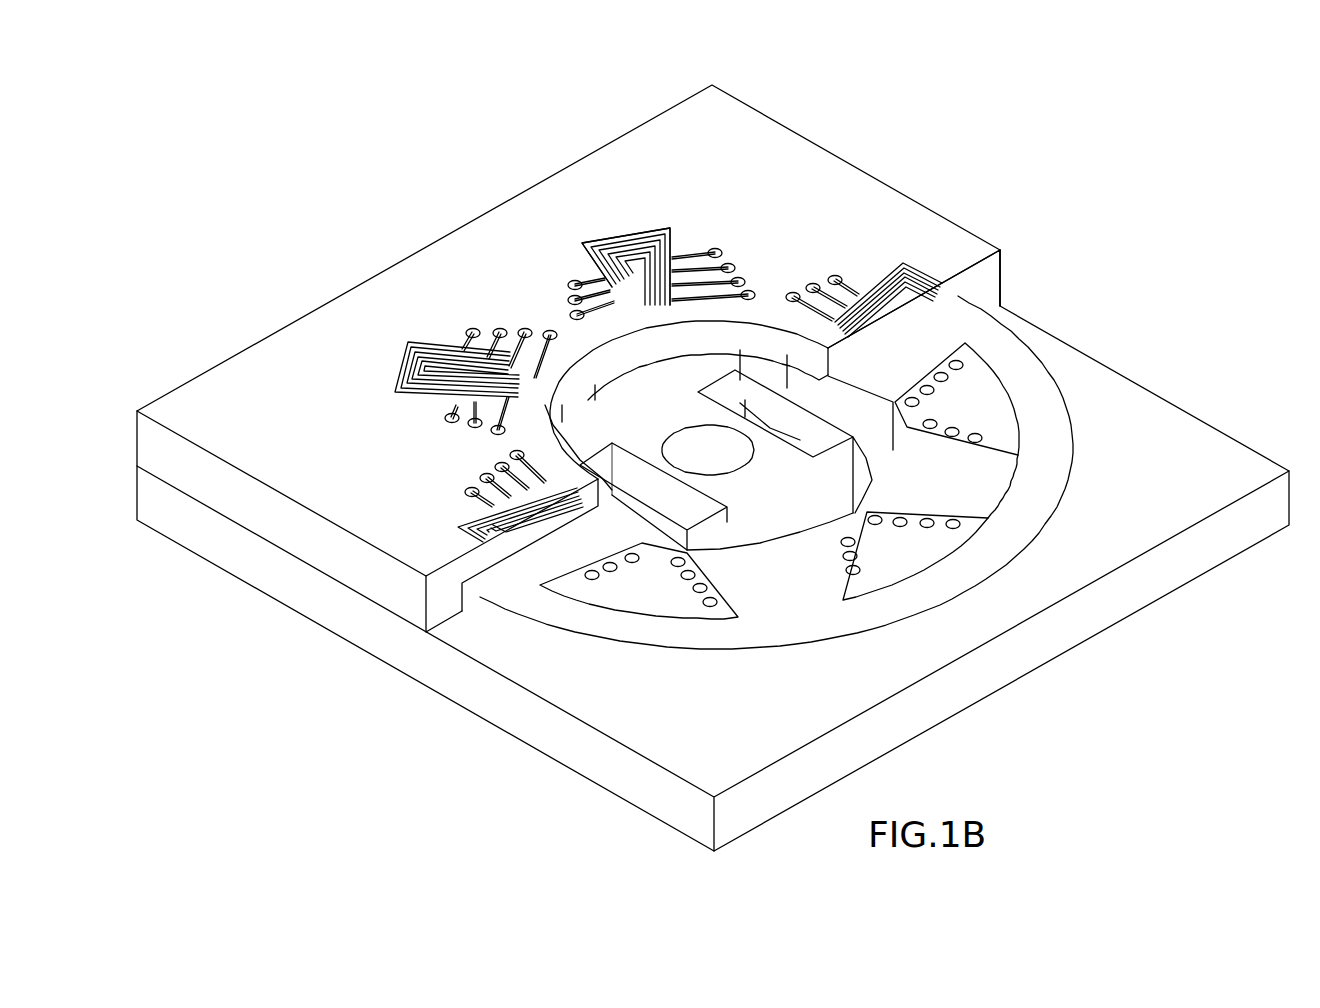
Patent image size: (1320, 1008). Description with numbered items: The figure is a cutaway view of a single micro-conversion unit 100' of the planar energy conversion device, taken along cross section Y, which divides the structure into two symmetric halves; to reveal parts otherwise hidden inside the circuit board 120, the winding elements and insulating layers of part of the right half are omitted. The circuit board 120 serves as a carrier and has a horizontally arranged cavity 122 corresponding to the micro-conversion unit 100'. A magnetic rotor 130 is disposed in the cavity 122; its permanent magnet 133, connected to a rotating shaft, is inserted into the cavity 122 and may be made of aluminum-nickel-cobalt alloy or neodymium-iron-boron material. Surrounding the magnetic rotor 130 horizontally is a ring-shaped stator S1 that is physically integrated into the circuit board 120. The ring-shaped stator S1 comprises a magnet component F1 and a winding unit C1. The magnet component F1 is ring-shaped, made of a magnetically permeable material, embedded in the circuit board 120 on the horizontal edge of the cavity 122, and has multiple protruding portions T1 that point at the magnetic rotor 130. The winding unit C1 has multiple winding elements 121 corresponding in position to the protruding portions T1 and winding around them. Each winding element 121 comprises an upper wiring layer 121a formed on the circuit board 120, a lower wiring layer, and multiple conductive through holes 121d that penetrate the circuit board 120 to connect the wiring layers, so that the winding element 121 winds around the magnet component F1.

The micro-conversion unit 100' is at (1092, 139).
The circuit board 120 is at (878, 178).
The winding element 121 is at (607, 222).
The upper wiring layer 121a is at (640, 224).
The conductive through hole 121d is at (719, 250).
The cavity 122 is at (630, 518).
The magnetic rotor 130 is at (780, 494).
The permanent magnet 133 is at (813, 494).
The winding unit C1 is at (1003, 305).
The ring-shaped stator S1 is at (1170, 323).
The magnet component F1 is at (1045, 387).
The protruding portion T1 is at (779, 481).
The cross section Y is at (1006, 278).